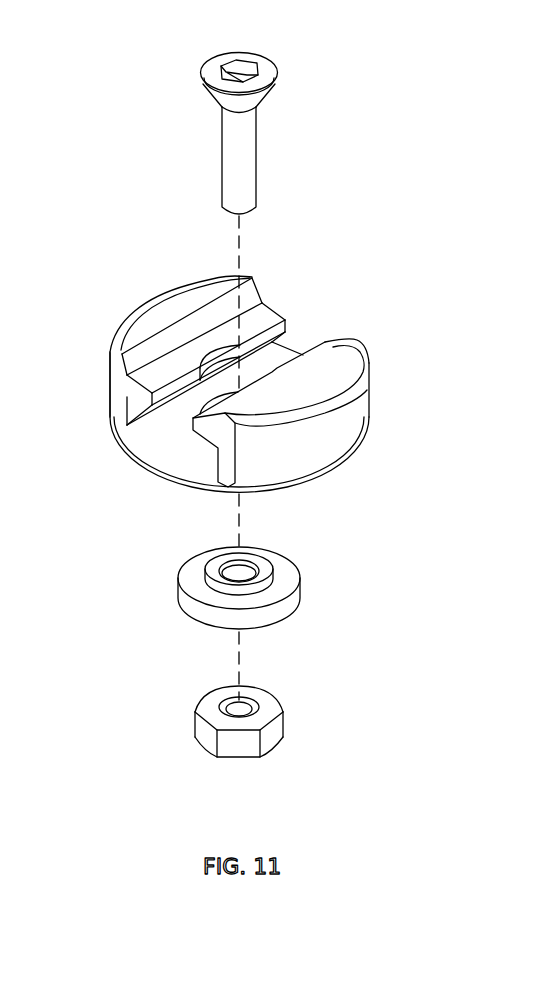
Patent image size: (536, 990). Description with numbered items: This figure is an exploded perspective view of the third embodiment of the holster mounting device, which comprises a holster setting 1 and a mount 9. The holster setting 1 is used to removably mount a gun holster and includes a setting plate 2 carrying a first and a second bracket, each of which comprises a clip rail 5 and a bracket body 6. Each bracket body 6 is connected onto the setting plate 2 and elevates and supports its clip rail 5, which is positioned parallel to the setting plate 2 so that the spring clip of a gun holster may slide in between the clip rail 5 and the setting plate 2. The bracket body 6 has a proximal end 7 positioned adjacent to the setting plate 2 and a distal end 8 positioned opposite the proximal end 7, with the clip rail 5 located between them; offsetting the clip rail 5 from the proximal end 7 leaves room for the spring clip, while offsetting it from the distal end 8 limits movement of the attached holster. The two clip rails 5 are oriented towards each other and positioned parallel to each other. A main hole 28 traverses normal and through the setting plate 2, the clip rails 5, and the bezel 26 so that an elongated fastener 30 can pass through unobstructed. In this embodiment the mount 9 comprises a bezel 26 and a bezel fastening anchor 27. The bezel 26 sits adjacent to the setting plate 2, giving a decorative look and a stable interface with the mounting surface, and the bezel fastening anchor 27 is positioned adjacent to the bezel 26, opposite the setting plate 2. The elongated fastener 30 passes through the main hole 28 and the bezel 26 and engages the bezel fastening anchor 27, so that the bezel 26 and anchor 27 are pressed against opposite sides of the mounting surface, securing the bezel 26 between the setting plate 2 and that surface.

The holster setting 1 is at (243, 399).
The setting plate 2 is at (145, 461).
The clip rail 5 is at (285, 325).
The bracket body 6 is at (108, 397).
The proximal end 7 is at (118, 428).
The distal end 8 is at (177, 292).
The mount 9 is at (246, 647).
The bezel 26 is at (217, 582).
The bezel fastening anchor 27 is at (196, 718).
The main hole 28 is at (250, 564).
The elongated fastener 30 is at (251, 134).